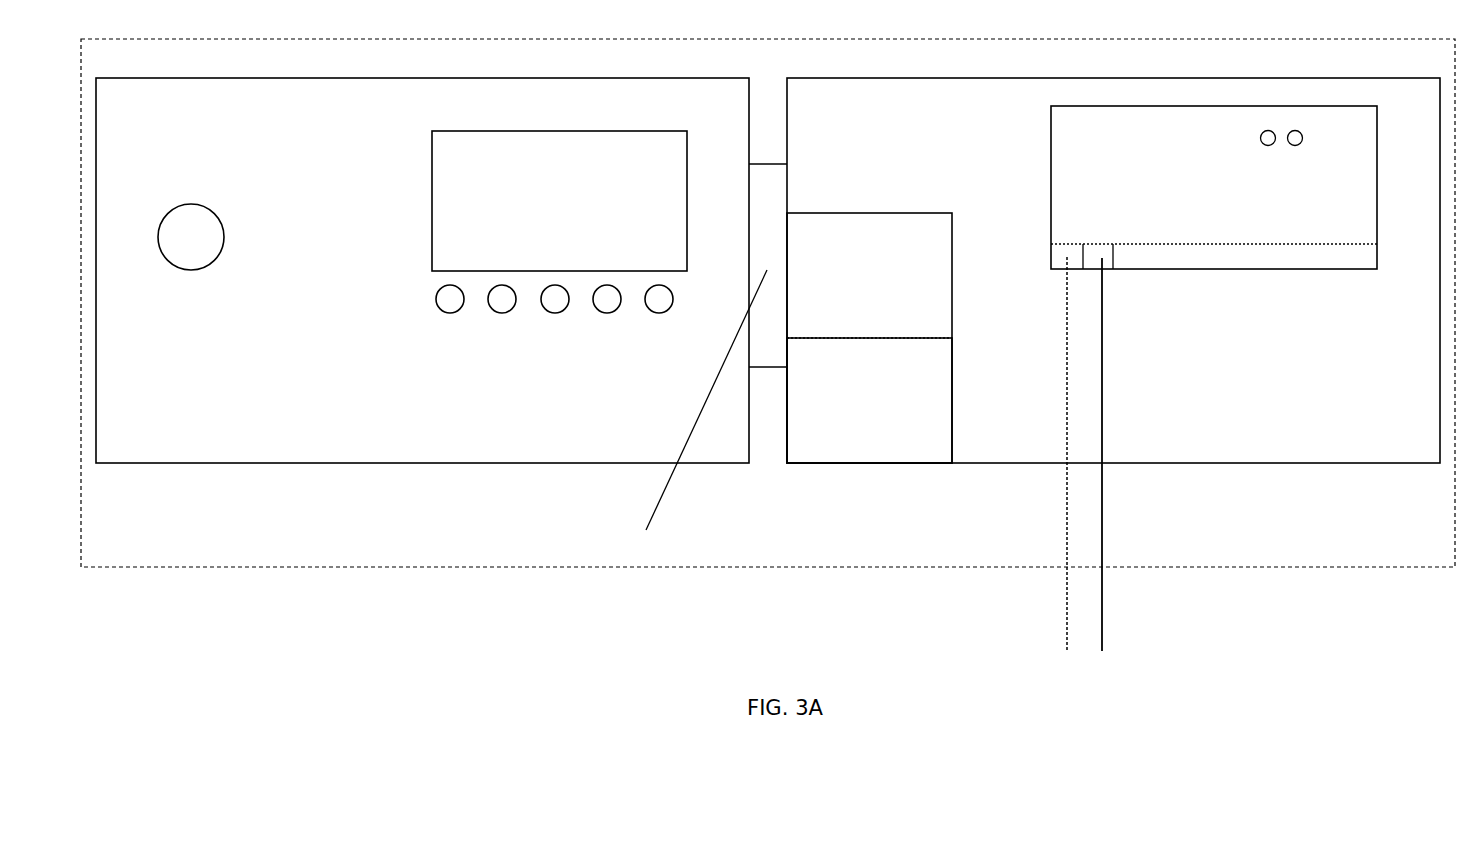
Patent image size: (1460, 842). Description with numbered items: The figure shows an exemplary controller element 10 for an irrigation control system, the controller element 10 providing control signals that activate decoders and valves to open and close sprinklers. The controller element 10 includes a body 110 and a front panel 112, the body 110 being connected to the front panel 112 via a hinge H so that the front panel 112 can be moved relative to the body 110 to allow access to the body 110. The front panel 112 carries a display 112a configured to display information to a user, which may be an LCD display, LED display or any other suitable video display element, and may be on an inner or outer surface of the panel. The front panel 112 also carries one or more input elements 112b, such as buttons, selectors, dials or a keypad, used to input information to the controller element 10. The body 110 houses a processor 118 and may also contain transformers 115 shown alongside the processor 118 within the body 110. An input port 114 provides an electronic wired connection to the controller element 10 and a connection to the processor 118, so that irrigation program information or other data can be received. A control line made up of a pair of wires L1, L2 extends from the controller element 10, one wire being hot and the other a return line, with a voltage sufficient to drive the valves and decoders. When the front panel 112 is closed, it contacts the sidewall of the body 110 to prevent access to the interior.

The controller element 10 is at (768, 285).
The front panel 112 is at (441, 255).
The display 112a is at (587, 201).
The input elements 112b is at (423, 296).
The body 110 is at (1113, 253).
The transformers 115 is at (869, 321).
The processor 118 is at (895, 400).
The input port 114 is at (1214, 187).
The wire L1 is at (1042, 454).
The wire L2 is at (1119, 454).
The hinge H is at (682, 414).